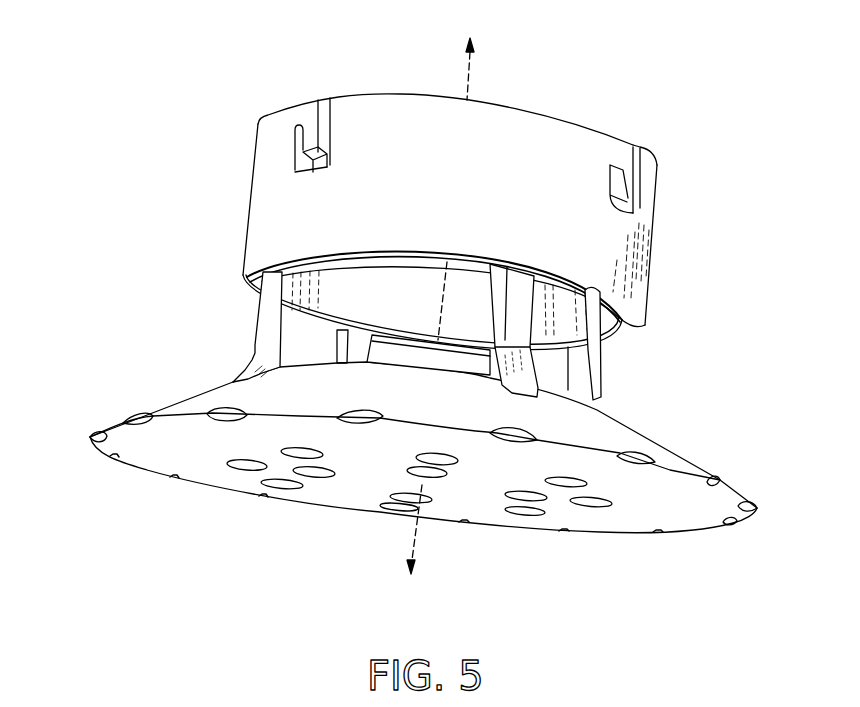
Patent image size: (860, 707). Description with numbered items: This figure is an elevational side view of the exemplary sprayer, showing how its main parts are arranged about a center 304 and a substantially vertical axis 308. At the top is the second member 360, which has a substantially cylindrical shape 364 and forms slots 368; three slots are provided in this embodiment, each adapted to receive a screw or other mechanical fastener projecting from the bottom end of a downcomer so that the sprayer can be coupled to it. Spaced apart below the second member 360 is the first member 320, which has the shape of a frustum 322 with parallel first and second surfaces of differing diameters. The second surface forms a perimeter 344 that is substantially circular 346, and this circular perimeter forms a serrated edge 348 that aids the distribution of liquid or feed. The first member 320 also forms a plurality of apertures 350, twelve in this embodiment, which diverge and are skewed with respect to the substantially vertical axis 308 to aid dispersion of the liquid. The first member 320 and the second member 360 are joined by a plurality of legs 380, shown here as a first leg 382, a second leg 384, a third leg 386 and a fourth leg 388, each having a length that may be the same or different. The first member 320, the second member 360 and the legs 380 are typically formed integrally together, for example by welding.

The center 304 is at (331, 534).
The substantially vertical axis 308 is at (468, 68).
The first member 320 is at (685, 431).
The frustum 322 is at (144, 395).
The perimeter 344 is at (77, 438).
The substantially circular perimeter 346 is at (692, 555).
The serrated edge 348 is at (722, 481).
The aperture 350 is at (241, 518).
The second member 360 is at (486, 188).
The substantially cylindrical shape 364 is at (147, 201).
The slot 368 is at (317, 190).
The plurality of legs 380 is at (413, 372).
The first leg 382 is at (284, 341).
The second leg 384 is at (508, 311).
The third leg 386 is at (598, 373).
The fourth leg 388 is at (368, 359).